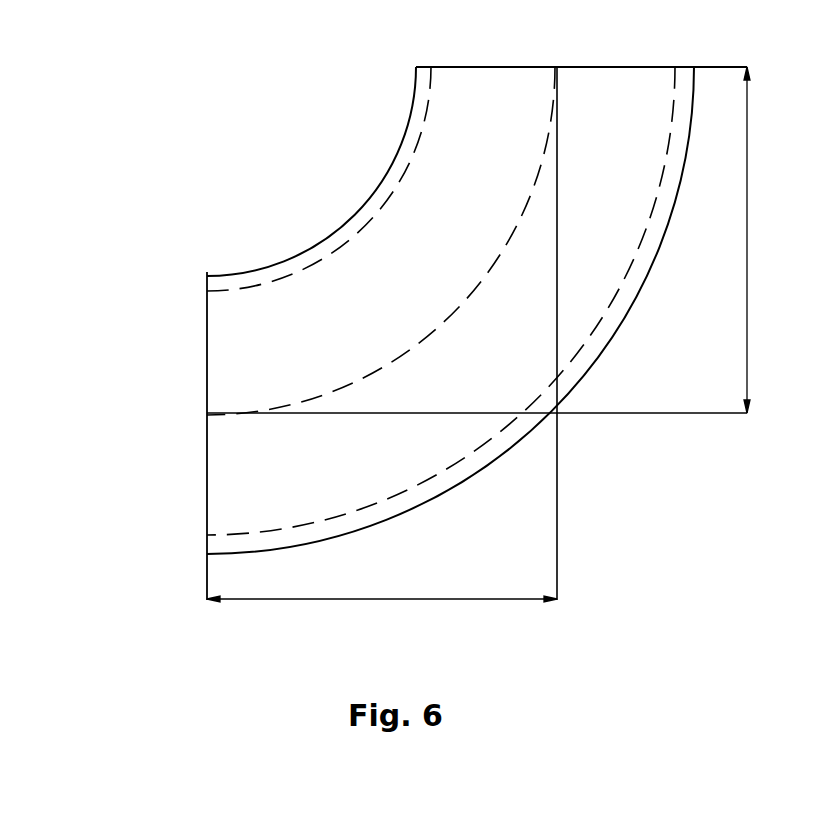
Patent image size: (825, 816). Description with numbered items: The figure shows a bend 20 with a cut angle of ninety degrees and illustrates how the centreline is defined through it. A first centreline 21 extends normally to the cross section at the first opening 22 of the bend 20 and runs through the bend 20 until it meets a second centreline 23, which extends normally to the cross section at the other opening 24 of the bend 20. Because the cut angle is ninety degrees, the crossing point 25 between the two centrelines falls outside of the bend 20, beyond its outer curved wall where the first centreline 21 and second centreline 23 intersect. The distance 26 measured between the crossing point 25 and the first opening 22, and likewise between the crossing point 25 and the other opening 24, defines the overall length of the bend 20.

The bend 20 is at (328, 268).
The first centreline 21 is at (346, 415).
The first opening 22 is at (207, 353).
The second centreline 23 is at (558, 196).
The other opening 24 is at (633, 66).
The crossing point 25 is at (560, 418).
The distance 26 is at (747, 359).